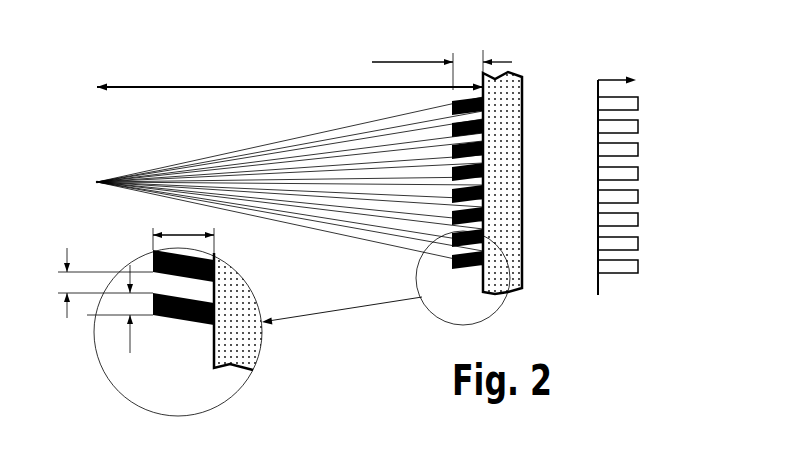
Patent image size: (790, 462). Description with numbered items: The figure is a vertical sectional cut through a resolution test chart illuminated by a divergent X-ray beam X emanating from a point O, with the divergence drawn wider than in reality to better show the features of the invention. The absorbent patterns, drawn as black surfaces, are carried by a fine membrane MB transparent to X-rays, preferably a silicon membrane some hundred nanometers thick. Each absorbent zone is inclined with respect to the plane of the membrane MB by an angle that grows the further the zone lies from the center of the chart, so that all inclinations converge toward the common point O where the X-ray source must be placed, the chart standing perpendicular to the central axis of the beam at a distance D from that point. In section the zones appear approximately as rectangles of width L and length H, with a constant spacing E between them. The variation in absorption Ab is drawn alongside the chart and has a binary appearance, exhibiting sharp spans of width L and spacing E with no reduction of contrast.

The X-ray beam X is at (267, 181).
The point of convergence O is at (97, 174).
The distance D is at (290, 78).
The length of absorbent zone H is at (332, 147).
The membrane MB is at (514, 101).
The spacing E is at (96, 283).
The width of absorbent zone L is at (120, 309).
The absorption variation Ab is at (629, 180).